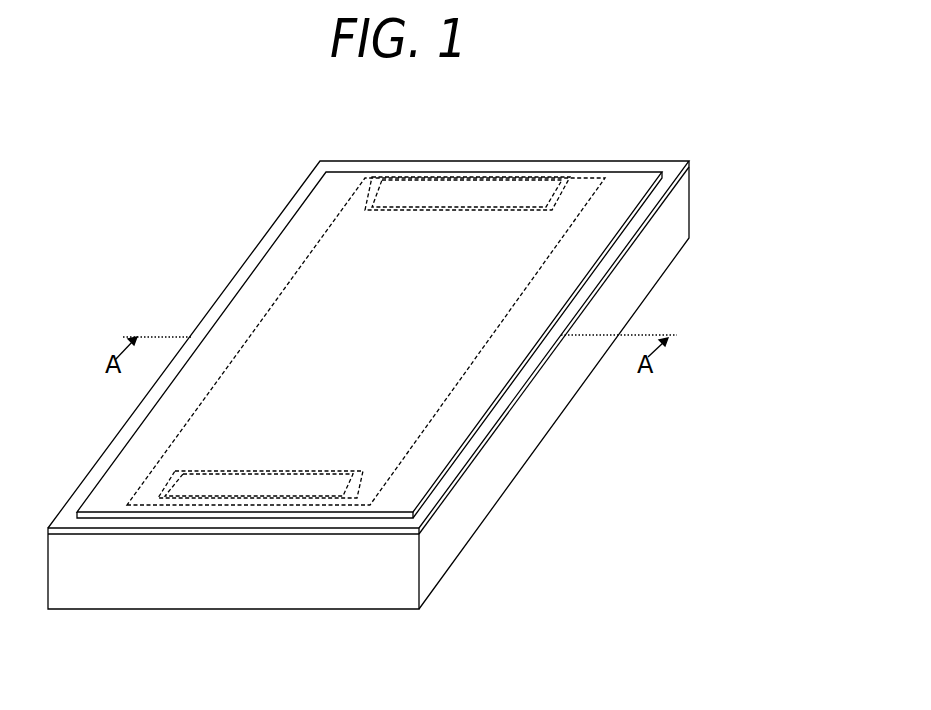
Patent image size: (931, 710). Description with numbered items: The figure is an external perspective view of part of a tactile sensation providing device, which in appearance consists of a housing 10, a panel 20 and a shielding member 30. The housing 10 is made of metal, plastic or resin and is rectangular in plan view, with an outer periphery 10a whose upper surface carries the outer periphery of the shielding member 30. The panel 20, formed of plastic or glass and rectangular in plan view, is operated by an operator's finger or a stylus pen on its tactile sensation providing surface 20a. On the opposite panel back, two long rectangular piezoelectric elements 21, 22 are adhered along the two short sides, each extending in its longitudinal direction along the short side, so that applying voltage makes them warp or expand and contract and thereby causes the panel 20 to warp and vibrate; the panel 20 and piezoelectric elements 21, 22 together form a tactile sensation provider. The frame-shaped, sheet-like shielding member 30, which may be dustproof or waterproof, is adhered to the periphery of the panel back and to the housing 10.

The housing 10 is at (697, 173).
The outer periphery of the housing 10a is at (678, 235).
The panel 20 is at (228, 333).
The tactile sensation providing surface 20a is at (270, 273).
The piezoelectric element 21 is at (265, 486).
The piezoelectric element 22 is at (460, 193).
The shielding member 30 is at (553, 279).